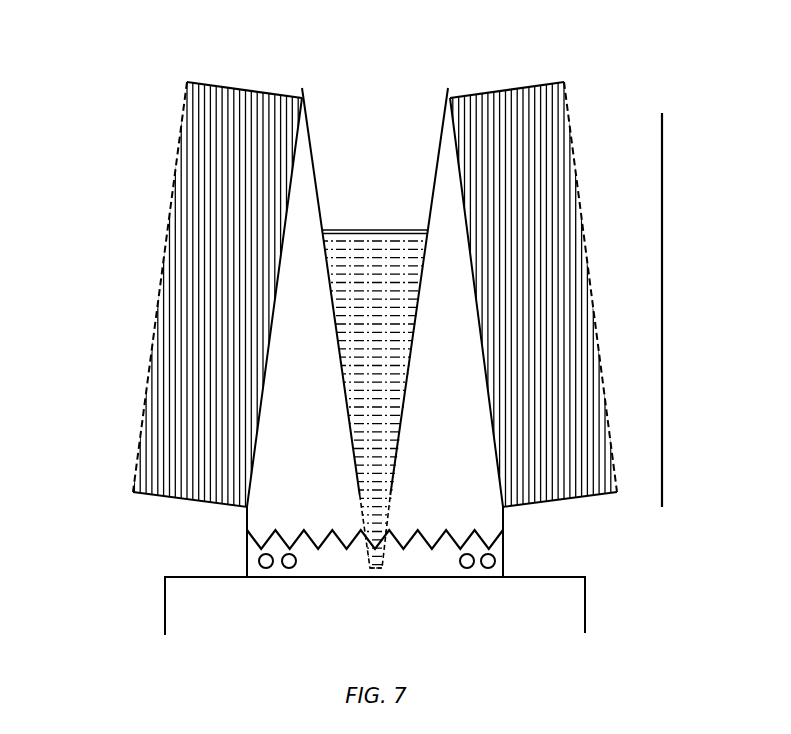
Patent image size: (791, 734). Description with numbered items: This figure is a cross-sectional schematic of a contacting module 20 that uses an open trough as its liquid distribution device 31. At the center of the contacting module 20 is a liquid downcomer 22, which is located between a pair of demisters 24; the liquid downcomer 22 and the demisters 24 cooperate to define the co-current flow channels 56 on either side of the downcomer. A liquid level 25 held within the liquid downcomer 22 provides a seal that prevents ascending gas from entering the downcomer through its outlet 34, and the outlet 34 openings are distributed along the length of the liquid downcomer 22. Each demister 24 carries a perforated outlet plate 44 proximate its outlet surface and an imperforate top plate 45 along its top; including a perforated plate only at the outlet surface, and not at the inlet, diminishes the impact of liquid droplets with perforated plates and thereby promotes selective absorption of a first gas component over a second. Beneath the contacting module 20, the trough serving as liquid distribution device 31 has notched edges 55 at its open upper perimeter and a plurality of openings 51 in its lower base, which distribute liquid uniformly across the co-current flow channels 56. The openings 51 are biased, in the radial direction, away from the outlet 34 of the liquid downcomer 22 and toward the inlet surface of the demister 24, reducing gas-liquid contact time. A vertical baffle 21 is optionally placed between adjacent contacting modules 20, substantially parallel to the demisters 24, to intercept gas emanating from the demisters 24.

The contacting module 20 is at (129, 63).
The vertical baffle 21 is at (664, 133).
The liquid downcomer 22 is at (374, 328).
The demister 24 is at (380, 278).
The liquid level 25 is at (364, 314).
The liquid distribution device 31 is at (275, 578).
The outlet 34 is at (362, 524).
The perforated outlet plate 44 is at (162, 280).
The imperforate top plate 45 is at (219, 82).
The openings 51 is at (467, 569).
The notched edges 55 is at (505, 538).
The co-current flow channel 56 is at (292, 304).